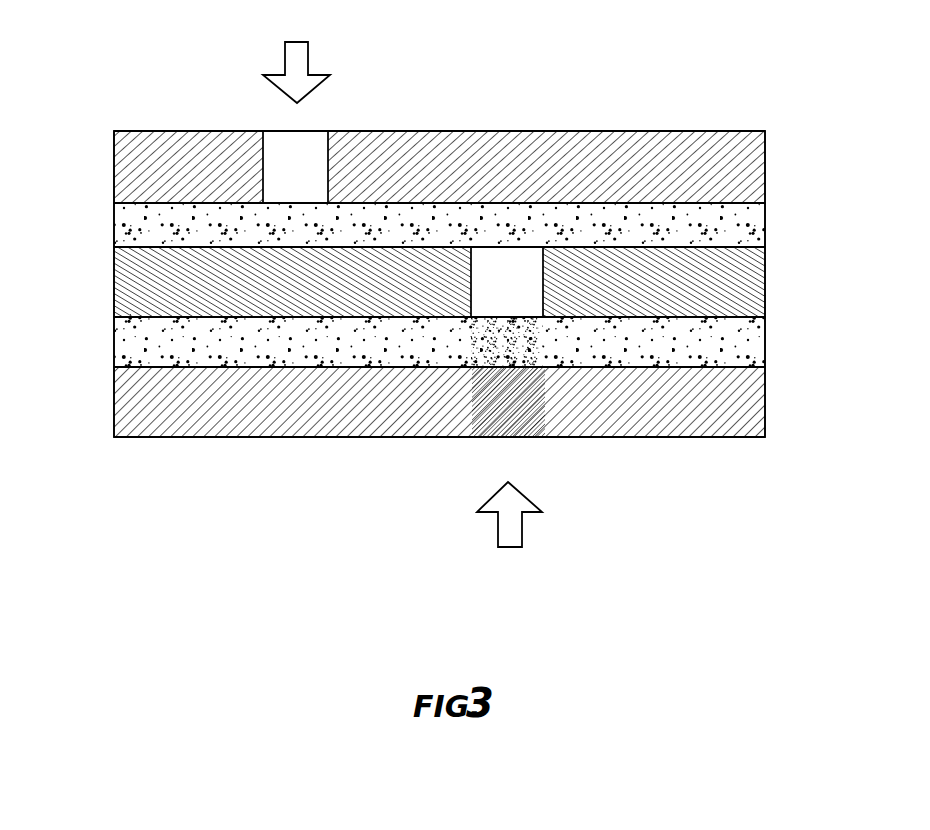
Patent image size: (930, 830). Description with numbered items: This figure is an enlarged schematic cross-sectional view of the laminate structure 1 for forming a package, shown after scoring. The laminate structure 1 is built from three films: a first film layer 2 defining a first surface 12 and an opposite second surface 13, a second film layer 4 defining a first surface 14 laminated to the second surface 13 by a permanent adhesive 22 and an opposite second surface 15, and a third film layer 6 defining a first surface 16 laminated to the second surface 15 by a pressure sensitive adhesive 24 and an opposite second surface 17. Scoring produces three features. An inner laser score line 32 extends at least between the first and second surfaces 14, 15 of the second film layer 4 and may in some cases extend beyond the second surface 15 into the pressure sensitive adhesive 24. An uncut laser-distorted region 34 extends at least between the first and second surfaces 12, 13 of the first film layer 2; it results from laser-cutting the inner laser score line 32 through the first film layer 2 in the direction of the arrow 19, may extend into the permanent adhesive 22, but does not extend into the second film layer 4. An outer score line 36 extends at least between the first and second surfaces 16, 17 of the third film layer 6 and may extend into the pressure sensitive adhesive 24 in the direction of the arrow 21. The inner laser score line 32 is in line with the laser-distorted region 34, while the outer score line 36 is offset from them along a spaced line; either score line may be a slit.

The laminate structure 1 is at (706, 84).
The first film layer 2 is at (112, 420).
The second film layer 4 is at (112, 272).
The third film layer 6 is at (112, 139).
The first surface of the first film layer 12 is at (676, 452).
The second surface of the first film layer 13 is at (728, 362).
The first surface of the second film layer 14 is at (729, 323).
The second surface of the second film layer 15 is at (730, 243).
The first surface of the third film layer 16 is at (728, 209).
The second surface of the third film layer 17 is at (498, 118).
The arrow 19 is at (518, 520).
The arrow 21 is at (303, 53).
The permanent adhesive 22 is at (112, 345).
The pressure sensitive adhesive 24 is at (112, 218).
The inner laser score line 32 is at (484, 302).
The uncut laser-distorted region 34 is at (506, 452).
The outer score line 36 is at (286, 157).